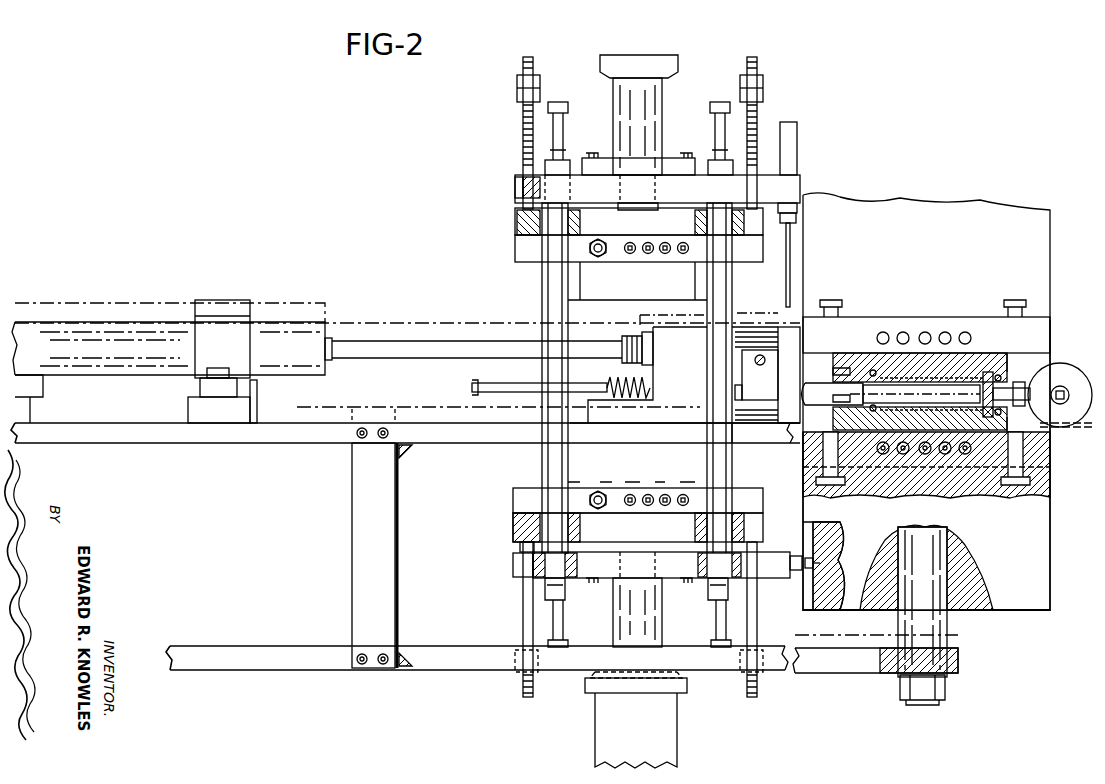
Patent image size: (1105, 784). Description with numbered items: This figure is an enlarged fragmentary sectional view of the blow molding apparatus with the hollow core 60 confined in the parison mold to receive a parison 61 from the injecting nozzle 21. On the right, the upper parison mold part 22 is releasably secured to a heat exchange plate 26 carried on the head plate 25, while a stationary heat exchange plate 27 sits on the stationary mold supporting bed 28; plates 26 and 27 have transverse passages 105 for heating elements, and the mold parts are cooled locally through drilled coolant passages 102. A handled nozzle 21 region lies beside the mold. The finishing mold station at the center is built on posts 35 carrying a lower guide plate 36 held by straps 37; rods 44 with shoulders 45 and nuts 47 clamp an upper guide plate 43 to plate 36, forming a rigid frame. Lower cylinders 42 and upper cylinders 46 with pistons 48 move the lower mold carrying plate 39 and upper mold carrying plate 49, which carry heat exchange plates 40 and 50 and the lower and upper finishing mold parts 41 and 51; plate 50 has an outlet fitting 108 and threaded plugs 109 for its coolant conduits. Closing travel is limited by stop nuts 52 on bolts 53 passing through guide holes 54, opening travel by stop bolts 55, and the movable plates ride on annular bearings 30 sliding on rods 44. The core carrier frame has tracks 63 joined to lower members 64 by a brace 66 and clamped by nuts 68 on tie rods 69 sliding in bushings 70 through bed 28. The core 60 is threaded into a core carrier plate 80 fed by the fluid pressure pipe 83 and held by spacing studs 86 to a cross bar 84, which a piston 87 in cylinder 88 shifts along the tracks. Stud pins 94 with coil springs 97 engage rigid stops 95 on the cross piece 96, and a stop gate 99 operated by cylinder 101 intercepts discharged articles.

The nozzle 21 is at (1055, 375).
The upper parison mold part 22 is at (860, 350).
The head plate 25 is at (1017, 215).
The heat exchange plate 26 is at (1040, 335).
The stationary heat exchange plate 27 is at (1040, 455).
The stationary mold supporting bed 28 is at (1040, 550).
The annular bearing 30 is at (515, 230).
The post 35 is at (668, 728).
The lower guide plate 36 is at (665, 570).
The strap 37 is at (795, 555).
The mold carrying plate 39 is at (513, 528).
The heat exchange plate 40 is at (515, 500).
The lower finishing mold part 41 is at (590, 475).
The cylinder 42 is at (620, 625).
The upper guide and support plate 43 is at (515, 180).
The rod 44 is at (545, 315).
The shoulder 45 is at (540, 180).
The upper cylinder 46 is at (660, 110).
The nut 47 is at (567, 170).
The piston 48 is at (648, 208).
The upper mold carrying plate 49 is at (517, 222).
The heat exchange plate 50 is at (520, 252).
The upper finishing mold part 51 is at (575, 292).
The adjustable stop nut 52 is at (517, 88).
The bolt 53 is at (528, 70).
The guide hole 54 is at (517, 188).
The adjustable stop bolt 55 is at (558, 103).
The hollow core 60 is at (917, 372).
The parison 61 is at (935, 383).
The track 63 is at (172, 443).
The lower member 64 is at (240, 655).
The brace 66 is at (355, 540).
The nut 68 is at (945, 682).
The tie rod 69 is at (935, 625).
The bushing 70 is at (945, 580).
The core carrier plate 80 is at (795, 330).
The fluid pressure delivering pipe 83 is at (755, 360).
The cross bar 84 is at (690, 380).
The spacing stud 86 is at (748, 437).
The piston 87 is at (365, 348).
The cylinder 88 is at (92, 333).
The stud pin 94 is at (470, 387).
The rigid stop 95 is at (257, 396).
The cross piece 96 is at (222, 423).
The coil spring 97 is at (608, 380).
The stop gate 99 is at (790, 245).
The cylinder 101 is at (797, 135).
The coolant passage 102 is at (990, 372).
The transverse passage 105 is at (883, 332).
The outlet fitting 108 is at (599, 256).
The threaded plug 109 is at (668, 255).